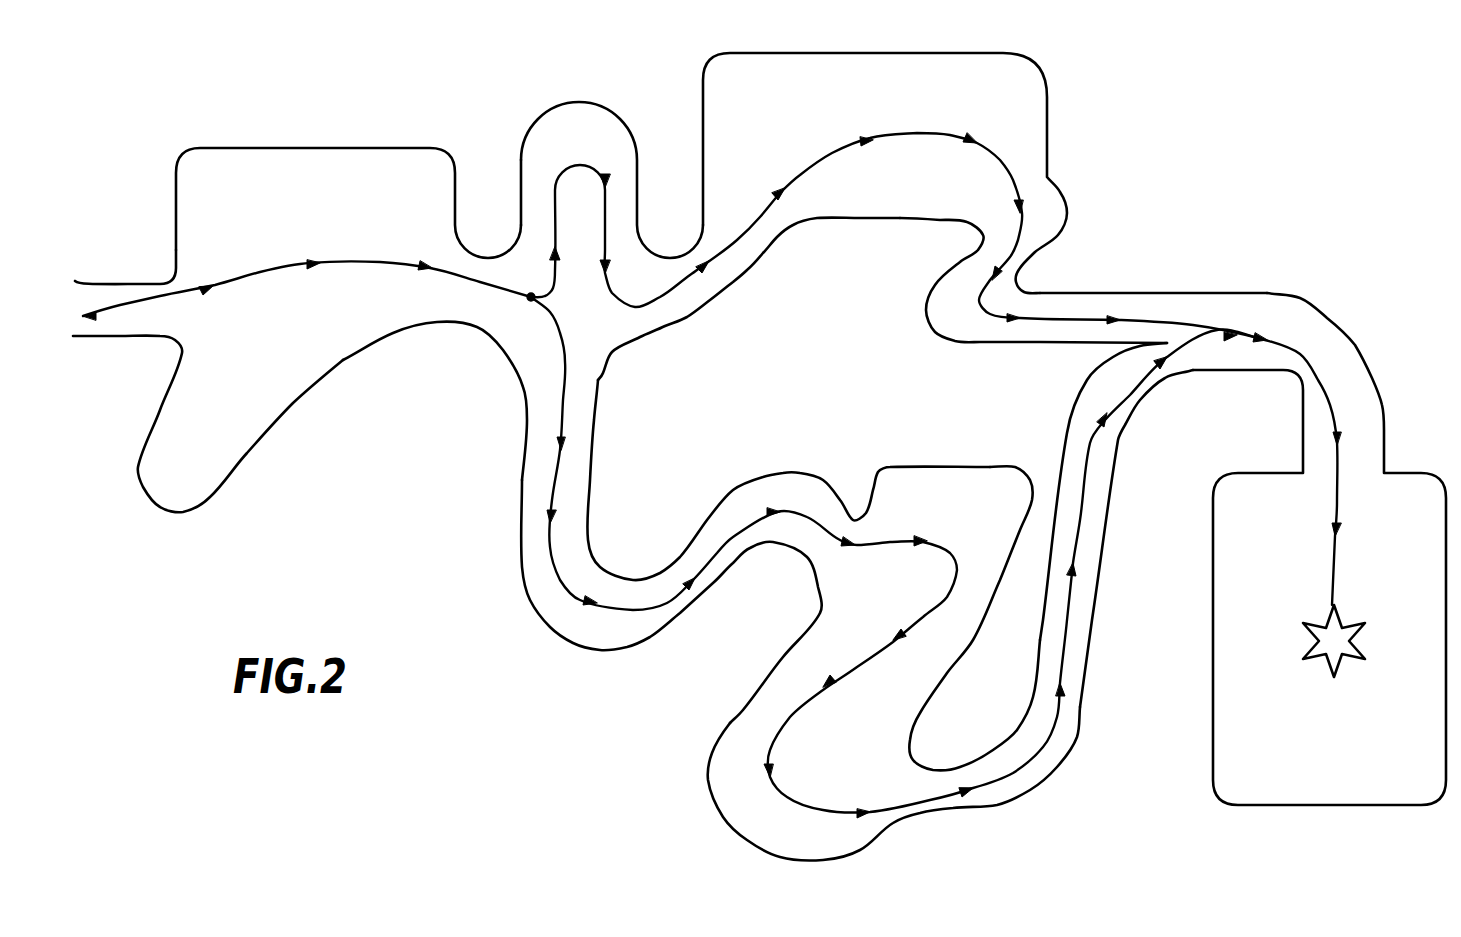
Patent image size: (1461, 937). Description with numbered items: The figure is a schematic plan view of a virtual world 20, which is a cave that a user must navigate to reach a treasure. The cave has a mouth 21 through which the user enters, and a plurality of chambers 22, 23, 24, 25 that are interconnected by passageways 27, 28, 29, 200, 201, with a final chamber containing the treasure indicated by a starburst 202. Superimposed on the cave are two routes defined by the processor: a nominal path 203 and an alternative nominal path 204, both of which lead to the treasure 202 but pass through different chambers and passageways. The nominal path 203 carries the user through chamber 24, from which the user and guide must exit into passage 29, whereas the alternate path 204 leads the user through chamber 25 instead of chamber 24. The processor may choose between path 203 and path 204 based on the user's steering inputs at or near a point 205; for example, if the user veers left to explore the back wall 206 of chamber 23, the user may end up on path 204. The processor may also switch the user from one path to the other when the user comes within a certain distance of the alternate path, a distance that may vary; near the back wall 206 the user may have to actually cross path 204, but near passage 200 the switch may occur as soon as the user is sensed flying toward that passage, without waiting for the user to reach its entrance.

The virtual world 20 is at (498, 411).
The mouth 21 is at (80, 313).
The chamber 22 is at (313, 162).
The chamber 23 is at (596, 118).
The chamber 24 is at (725, 790).
The chamber 25 is at (1027, 87).
The passageway 27 is at (457, 310).
The passageway 28 is at (537, 595).
The passageway 29 is at (1090, 578).
The passageway 200 is at (685, 310).
The passageway 201 is at (1075, 298).
The starburst (treasure) 202 is at (1338, 624).
The nominal path 203 is at (305, 270).
The alternative nominal path 204 is at (608, 210).
The point 205 is at (535, 306).
The back wall 206 is at (525, 135).